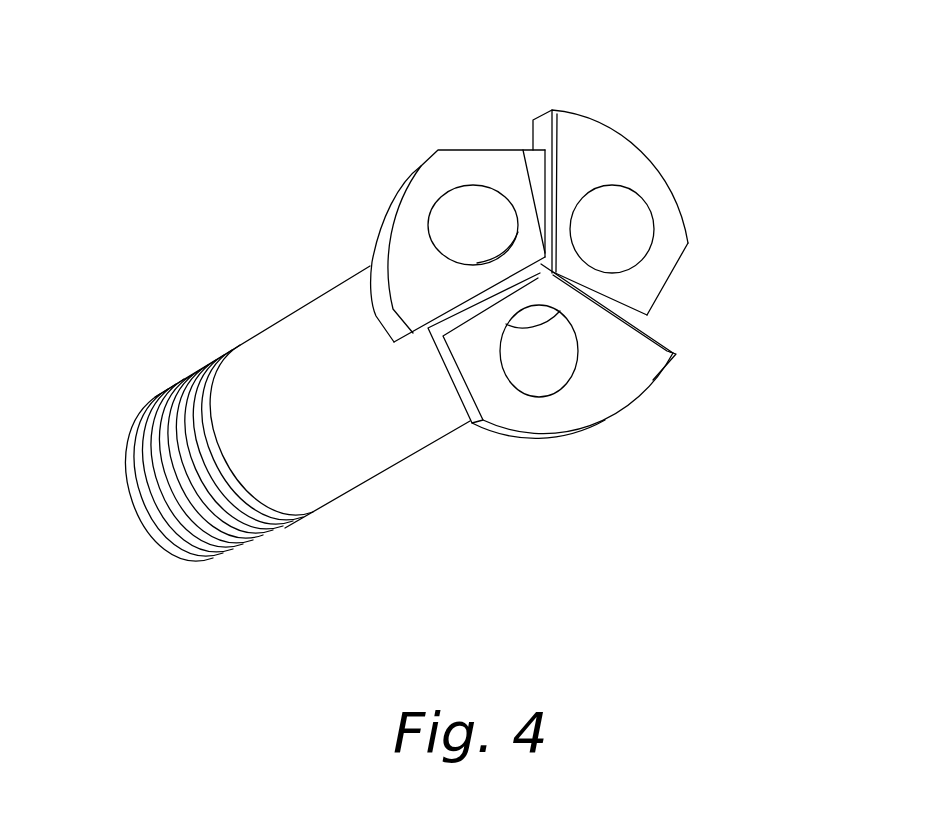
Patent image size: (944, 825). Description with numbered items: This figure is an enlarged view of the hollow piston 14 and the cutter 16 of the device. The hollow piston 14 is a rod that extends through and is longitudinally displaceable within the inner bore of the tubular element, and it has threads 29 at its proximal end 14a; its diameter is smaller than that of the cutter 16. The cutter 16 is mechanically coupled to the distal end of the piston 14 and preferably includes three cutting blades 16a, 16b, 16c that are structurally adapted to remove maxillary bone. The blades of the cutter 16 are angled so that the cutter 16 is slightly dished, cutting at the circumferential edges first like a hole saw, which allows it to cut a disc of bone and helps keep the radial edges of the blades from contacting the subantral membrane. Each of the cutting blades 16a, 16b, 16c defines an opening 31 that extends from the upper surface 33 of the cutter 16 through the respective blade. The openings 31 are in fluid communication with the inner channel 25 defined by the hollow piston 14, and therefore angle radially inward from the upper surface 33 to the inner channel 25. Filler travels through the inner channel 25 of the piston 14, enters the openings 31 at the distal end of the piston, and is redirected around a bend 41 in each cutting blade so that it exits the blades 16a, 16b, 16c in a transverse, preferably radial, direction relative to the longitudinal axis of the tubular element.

The hollow piston 14 is at (288, 316).
The proximal end 14a is at (140, 475).
The threads 29 is at (165, 413).
The cutter 16 is at (595, 290).
The cutting blade 16a is at (676, 212).
The cutting blade 16b is at (465, 172).
The cutting blade 16c is at (562, 421).
The inner channel 25 is at (511, 236).
The openings 31 is at (633, 233).
The upper surface 33 is at (652, 263).
The bend 41 is at (530, 328).